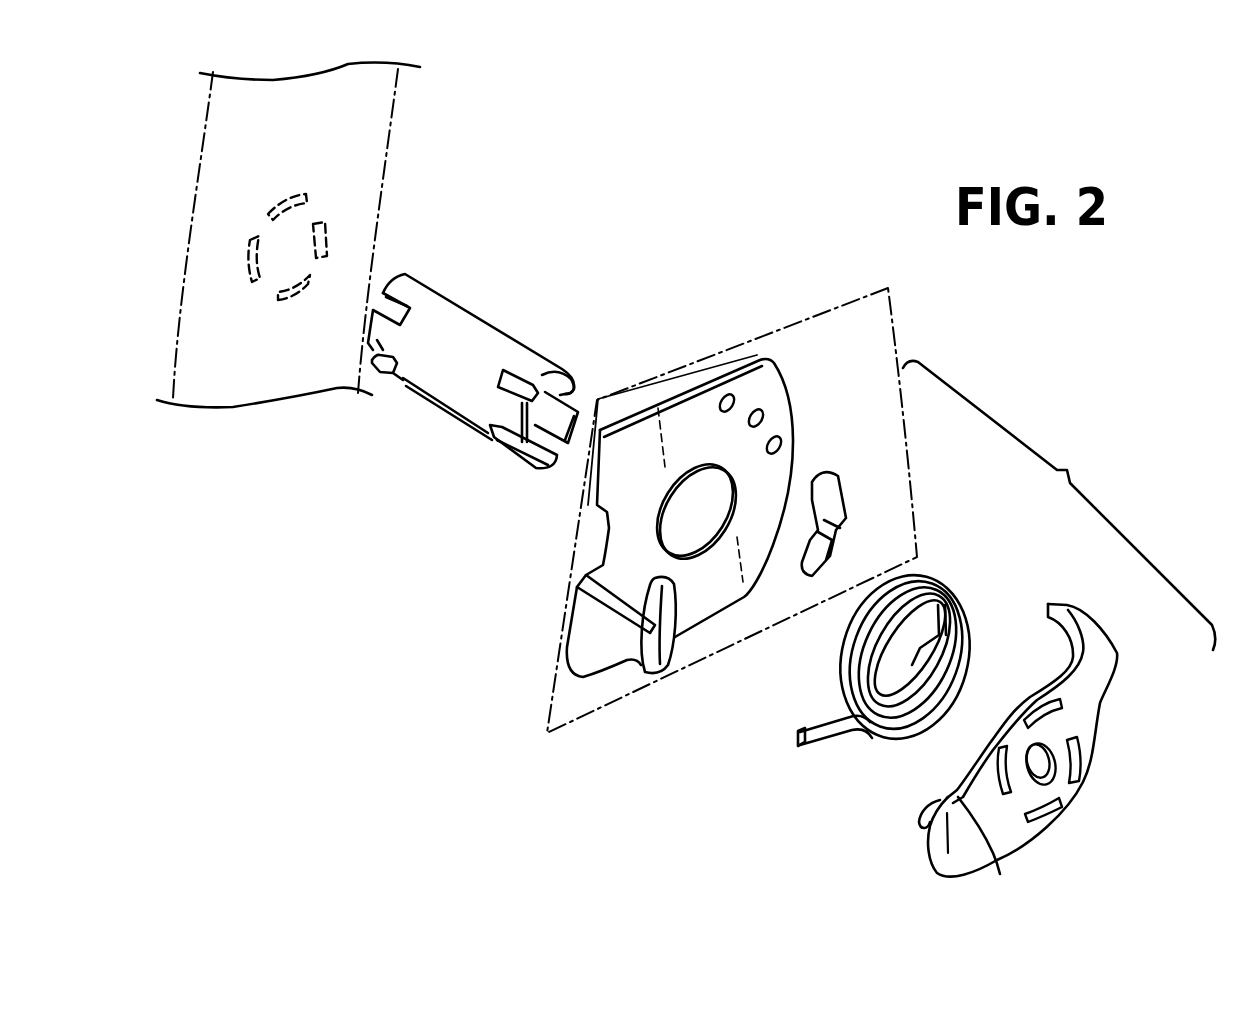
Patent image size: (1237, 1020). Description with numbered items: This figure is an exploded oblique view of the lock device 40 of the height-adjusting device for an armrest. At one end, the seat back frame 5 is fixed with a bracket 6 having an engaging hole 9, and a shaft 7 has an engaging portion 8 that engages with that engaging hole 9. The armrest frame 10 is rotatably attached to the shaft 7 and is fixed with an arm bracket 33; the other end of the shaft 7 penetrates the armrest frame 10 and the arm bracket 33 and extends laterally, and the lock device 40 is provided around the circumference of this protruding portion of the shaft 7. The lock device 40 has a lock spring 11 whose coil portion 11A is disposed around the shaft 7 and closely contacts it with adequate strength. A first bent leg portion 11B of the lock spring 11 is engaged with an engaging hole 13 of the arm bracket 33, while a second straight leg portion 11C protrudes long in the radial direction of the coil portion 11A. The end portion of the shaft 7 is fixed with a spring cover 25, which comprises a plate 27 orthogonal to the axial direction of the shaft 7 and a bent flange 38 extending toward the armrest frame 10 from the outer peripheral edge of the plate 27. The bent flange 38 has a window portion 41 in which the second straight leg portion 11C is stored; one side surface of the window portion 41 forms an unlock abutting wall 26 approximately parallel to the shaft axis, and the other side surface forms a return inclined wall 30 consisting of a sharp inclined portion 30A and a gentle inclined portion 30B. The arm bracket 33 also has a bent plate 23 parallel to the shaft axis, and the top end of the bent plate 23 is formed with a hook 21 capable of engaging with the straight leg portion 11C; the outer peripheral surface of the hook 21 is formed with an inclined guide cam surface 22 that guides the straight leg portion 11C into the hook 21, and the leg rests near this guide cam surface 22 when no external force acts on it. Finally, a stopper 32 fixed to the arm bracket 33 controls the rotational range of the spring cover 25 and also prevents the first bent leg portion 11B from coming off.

The seat back frame 5 is at (323, 235).
The bracket 6 is at (394, 94).
The engaging hole 9 is at (293, 196).
The shaft 7 is at (493, 322).
The engaging portion 8 is at (383, 350).
The armrest frame 10 is at (745, 336).
The engaging hole 13 is at (781, 437).
The arm bracket 33 is at (798, 436).
The stopper 32 is at (840, 481).
The guide cam surface 22 is at (646, 575).
The bent plate 23 is at (612, 640).
The hook 21 is at (646, 660).
The lock device 40 is at (1059, 505).
The lock spring 11 is at (895, 748).
The coil portion 11A is at (968, 667).
The first bent leg portion 11B is at (960, 597).
The second straight leg portion 11C is at (818, 748).
The spring cover 25 is at (1104, 726).
The unlock abutting wall 26 is at (1080, 607).
The bent flange 38 is at (1088, 612).
The window portion 41 is at (993, 701).
The plate 27 is at (1074, 800).
The return inclined wall 30 is at (934, 802).
The sharp inclined portion 30A is at (962, 806).
The gentle inclined portion 30B is at (928, 826).